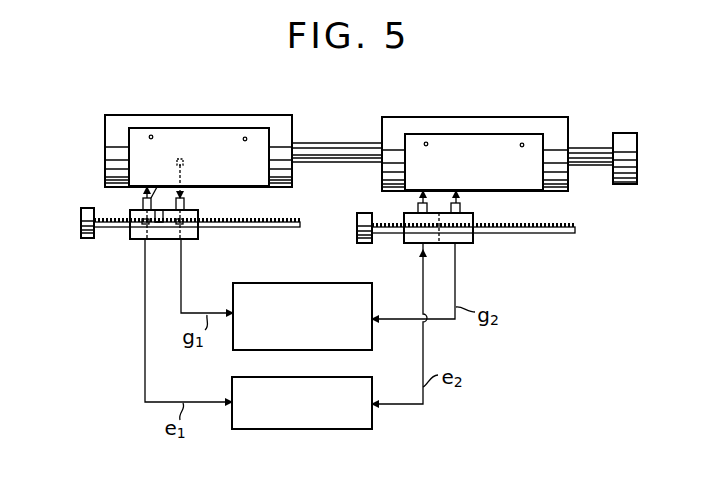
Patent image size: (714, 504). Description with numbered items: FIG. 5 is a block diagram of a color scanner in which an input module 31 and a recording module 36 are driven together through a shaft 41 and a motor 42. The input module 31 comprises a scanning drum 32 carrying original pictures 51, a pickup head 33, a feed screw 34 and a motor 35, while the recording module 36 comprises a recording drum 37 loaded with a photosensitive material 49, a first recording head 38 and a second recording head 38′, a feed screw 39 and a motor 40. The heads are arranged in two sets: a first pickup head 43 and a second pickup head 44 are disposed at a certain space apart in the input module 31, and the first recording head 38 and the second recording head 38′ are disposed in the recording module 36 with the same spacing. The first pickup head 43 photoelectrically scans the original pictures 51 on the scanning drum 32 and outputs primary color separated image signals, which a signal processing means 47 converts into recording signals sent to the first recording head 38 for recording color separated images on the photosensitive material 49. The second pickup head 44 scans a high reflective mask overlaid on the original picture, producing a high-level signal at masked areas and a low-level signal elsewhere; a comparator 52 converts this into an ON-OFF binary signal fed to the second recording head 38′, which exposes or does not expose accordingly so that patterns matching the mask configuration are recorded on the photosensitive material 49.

The input module 31 is at (223, 115).
The original pictures 51 is at (129, 141).
The scanning drum 32 is at (292, 130).
The shaft 41 is at (312, 162).
The recording module 36 is at (520, 117).
The photosensitive material 49 is at (537, 190).
The recording drum 37 is at (566, 132).
The motor 42 is at (622, 184).
The motor 35 is at (80, 228).
The feed screw 34 is at (272, 229).
The pickup head 33 is at (163, 240).
The second pickup head 44 is at (144, 226).
The first pickup head 43 is at (183, 226).
The motor 40 is at (357, 223).
The feed screw 39 is at (560, 234).
The first recording head 38 is at (452, 235).
The second recording head 38' is at (387, 245).
The signal processing means 47 is at (333, 283).
The comparator 52 is at (343, 430).